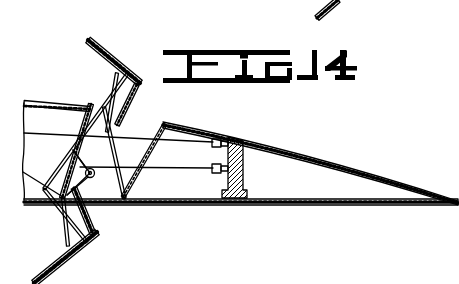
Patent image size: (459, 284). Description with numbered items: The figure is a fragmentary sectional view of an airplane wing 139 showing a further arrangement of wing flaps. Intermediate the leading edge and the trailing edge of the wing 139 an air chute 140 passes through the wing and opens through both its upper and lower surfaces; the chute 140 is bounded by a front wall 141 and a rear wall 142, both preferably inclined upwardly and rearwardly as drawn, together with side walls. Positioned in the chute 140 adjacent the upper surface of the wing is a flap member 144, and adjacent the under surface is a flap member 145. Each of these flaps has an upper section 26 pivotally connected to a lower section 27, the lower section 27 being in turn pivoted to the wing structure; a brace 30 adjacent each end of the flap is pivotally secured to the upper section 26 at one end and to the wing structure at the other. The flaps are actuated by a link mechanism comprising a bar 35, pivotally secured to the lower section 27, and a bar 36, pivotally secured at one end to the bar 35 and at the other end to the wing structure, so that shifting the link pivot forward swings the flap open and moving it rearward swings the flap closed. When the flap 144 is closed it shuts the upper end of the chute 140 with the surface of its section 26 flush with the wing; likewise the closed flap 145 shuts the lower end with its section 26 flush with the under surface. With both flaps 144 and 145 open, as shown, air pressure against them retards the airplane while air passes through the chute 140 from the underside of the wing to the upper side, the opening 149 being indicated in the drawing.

The upper section 26 is at (108, 52).
The lower section 27 is at (137, 92).
The brace 30 is at (105, 98).
The bar 35 is at (113, 77).
The bar 36 is at (106, 148).
The airplane wing 139 is at (281, 141).
The air chute 140 is at (151, 124).
The front wall 141 is at (81, 122).
The rear wall 142 is at (149, 149).
The flap member 144 is at (108, 32).
The flap member 145 is at (67, 275).
The opening 149 is at (132, 120).